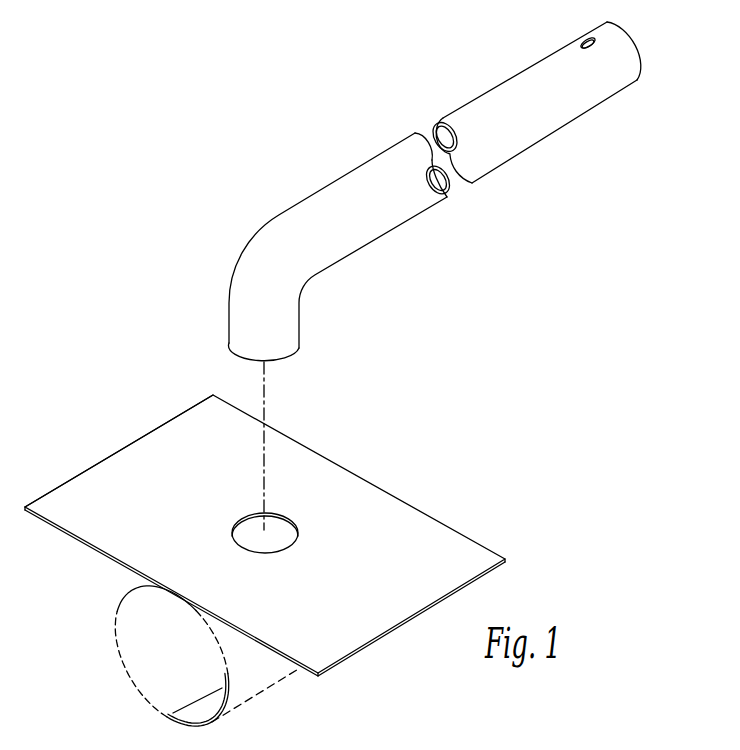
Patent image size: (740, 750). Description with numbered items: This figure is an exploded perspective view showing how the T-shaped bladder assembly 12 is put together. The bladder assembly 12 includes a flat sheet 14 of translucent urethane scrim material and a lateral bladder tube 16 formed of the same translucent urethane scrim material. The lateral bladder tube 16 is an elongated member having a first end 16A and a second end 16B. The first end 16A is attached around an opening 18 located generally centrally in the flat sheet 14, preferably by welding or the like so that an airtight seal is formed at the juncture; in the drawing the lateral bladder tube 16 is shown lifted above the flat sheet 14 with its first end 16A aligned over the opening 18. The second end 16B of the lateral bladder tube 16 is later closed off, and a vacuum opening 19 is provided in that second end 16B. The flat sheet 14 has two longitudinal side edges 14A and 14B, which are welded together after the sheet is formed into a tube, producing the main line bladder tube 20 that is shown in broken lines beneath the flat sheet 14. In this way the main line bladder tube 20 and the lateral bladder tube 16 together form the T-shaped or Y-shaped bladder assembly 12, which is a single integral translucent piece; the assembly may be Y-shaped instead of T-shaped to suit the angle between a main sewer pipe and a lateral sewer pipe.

The bladder assembly 12 is at (450, 423).
The flat sheet 14 is at (263, 535).
The longitudinal side edge 14A is at (370, 641).
The longitudinal side edge 14B is at (77, 476).
The lateral bladder tube 16 is at (347, 331).
The first end 16A is at (287, 357).
The second end 16B is at (566, 102).
The opening 18 is at (289, 519).
The vacuum opening 19 is at (584, 41).
The main line bladder tube 20 is at (265, 690).